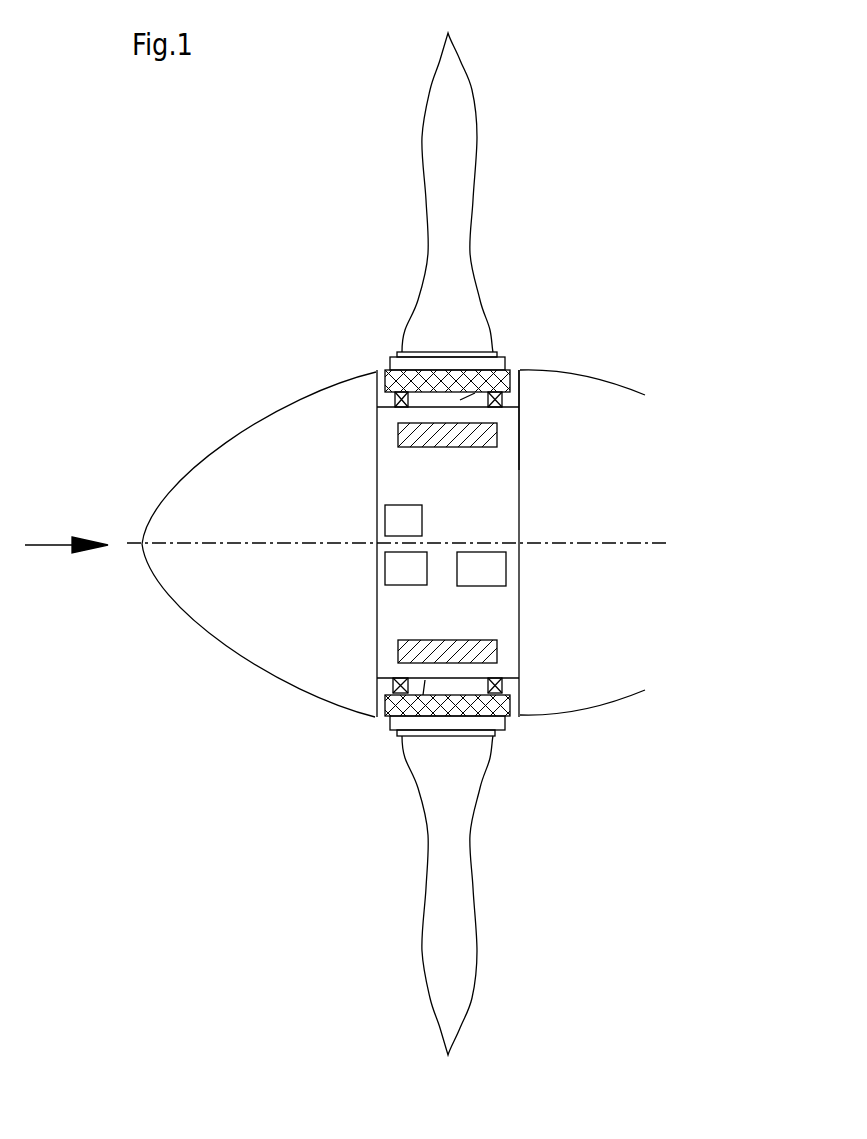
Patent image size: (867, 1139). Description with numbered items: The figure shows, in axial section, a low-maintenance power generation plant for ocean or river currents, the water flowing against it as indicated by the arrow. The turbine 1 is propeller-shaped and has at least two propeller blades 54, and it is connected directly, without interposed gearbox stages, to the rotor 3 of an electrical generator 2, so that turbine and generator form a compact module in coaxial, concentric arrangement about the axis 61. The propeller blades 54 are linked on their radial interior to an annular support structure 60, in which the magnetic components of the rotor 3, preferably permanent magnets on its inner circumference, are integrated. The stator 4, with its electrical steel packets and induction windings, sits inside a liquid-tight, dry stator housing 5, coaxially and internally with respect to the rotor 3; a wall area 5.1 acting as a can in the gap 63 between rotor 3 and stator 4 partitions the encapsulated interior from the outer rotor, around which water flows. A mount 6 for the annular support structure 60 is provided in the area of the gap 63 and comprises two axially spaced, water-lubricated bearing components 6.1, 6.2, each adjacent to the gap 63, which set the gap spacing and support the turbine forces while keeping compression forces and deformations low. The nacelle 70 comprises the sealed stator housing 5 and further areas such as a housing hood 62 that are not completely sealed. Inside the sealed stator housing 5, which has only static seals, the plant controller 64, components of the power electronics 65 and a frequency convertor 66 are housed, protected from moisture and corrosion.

The turbine 1 is at (453, 265).
The electrical generator 2 is at (456, 492).
The rotor 3 is at (522, 370).
The stator 4 is at (397, 432).
The stator housing 5 is at (520, 437).
The wall area 5.1 is at (415, 713).
The mount 6 is at (400, 372).
The bearing component 6.1 is at (383, 686).
The bearing component 6.2 is at (505, 688).
The propeller blade 54 is at (462, 908).
The annular support structure 60 is at (487, 722).
The axis of rotation 61 is at (628, 543).
The housing hood 62 is at (252, 599).
The gap 63 is at (495, 352).
The plant controller 64 is at (400, 514).
The power electronics 65 is at (407, 567).
The frequency convertor 66 is at (485, 568).
The nacelle 70 is at (630, 462).